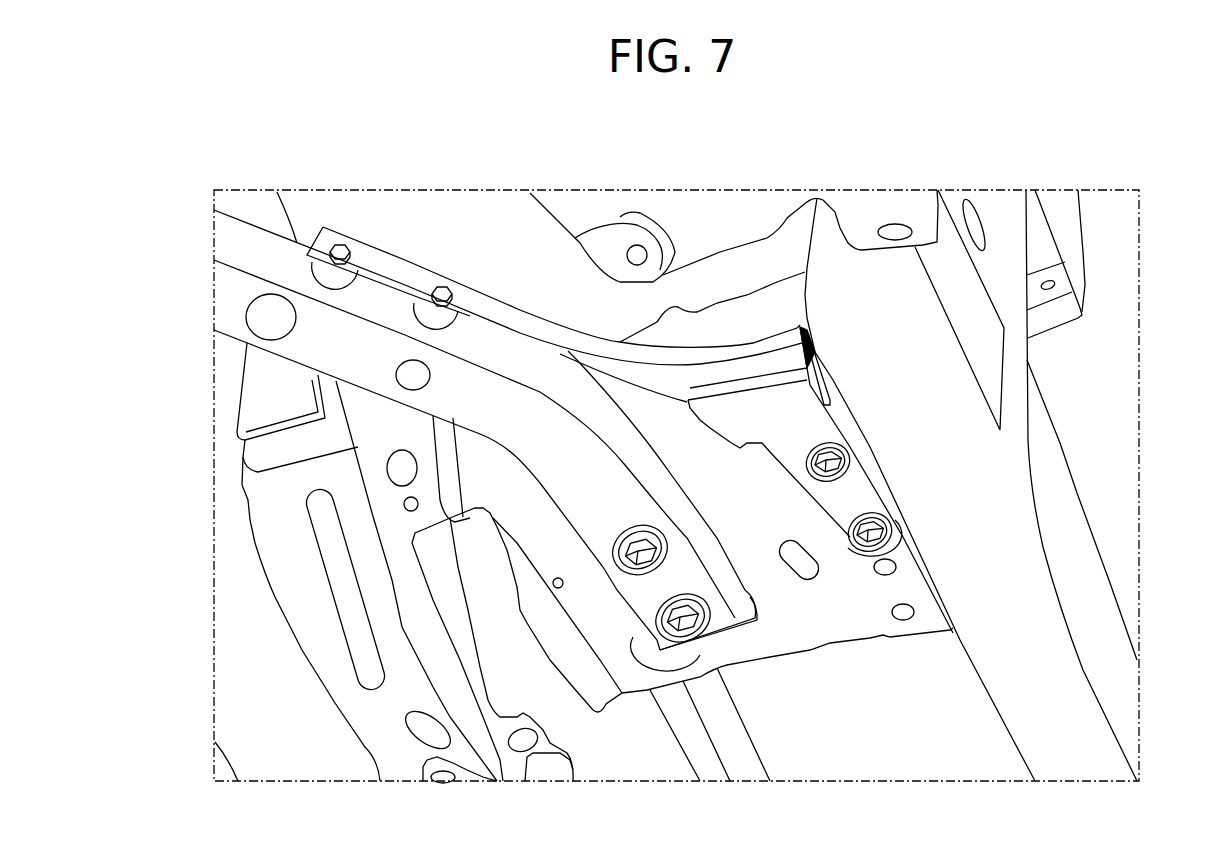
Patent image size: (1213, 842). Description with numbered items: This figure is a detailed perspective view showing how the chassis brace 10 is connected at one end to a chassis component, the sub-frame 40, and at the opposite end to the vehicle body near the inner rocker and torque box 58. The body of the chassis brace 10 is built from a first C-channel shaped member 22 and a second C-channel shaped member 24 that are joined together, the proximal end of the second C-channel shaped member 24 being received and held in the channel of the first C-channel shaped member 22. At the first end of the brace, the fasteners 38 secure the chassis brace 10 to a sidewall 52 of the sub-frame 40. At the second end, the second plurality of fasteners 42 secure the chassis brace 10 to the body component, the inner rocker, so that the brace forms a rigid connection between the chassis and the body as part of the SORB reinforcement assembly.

The chassis brace 10 is at (647, 314).
The first C-channel shaped member 22 is at (500, 310).
The second C-channel shaped member 24 is at (858, 492).
The fasteners 38 is at (440, 290).
The sub-frame 40 is at (447, 395).
The second plurality of fasteners 42 is at (850, 460).
The sidewall 52 is at (262, 250).
The torque box 58 is at (827, 620).